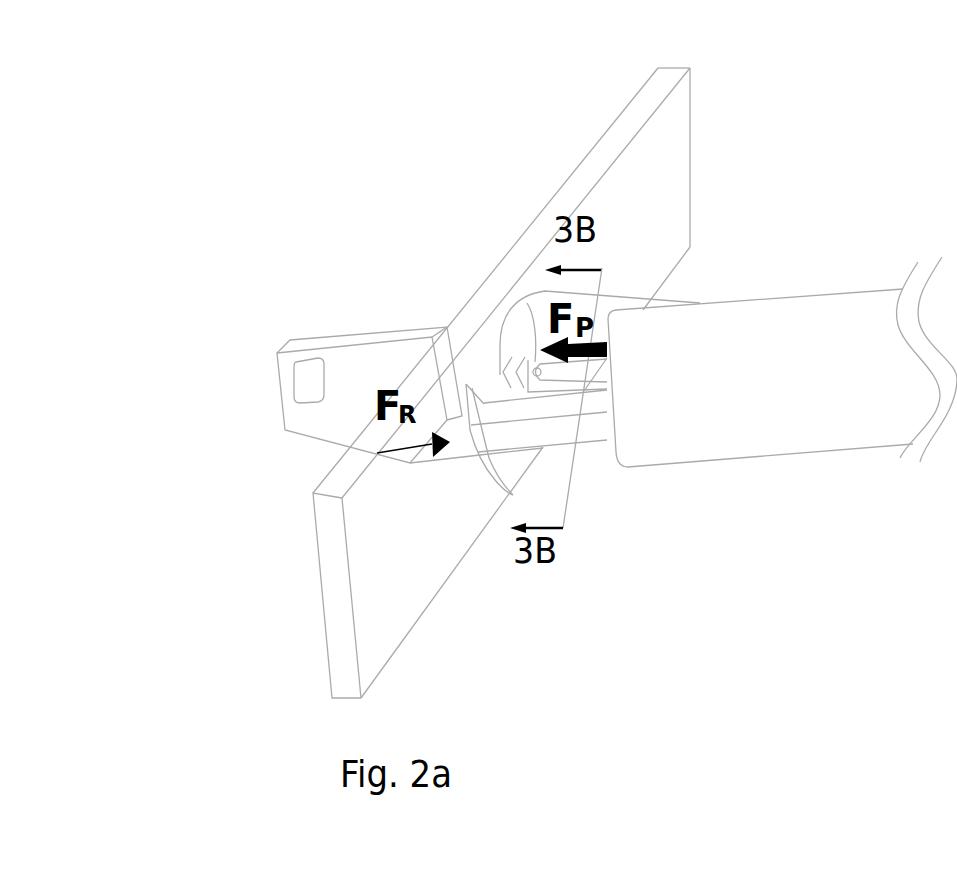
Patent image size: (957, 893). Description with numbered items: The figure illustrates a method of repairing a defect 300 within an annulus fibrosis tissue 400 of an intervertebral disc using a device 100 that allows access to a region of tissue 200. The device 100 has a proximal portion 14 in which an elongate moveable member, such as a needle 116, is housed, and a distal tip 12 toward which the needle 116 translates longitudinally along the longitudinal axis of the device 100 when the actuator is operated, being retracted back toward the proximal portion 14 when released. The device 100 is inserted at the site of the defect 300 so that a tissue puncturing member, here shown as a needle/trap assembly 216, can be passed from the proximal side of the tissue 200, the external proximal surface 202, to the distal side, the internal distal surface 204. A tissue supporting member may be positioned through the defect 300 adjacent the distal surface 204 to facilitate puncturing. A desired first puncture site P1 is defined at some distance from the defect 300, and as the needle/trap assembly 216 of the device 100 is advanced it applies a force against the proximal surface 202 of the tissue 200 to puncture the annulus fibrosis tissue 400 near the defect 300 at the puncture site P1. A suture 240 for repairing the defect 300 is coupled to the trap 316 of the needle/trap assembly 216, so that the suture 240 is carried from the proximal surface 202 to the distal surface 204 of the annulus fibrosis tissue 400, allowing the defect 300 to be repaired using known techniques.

The device 100 is at (848, 264).
The distal tip 12 is at (344, 293).
The proximal portion 14 is at (761, 287).
The needle 116 is at (536, 366).
The tissue 200 is at (679, 213).
The proximal surface 202 is at (388, 612).
The distal surface 204 is at (314, 582).
The needle/trap assembly 216 is at (517, 349).
The suture 240 is at (676, 288).
The defect 300 is at (489, 463).
The trap 316 is at (540, 390).
The annulus fibrosis tissue 400 is at (611, 115).
The first puncture site P1 is at (503, 364).